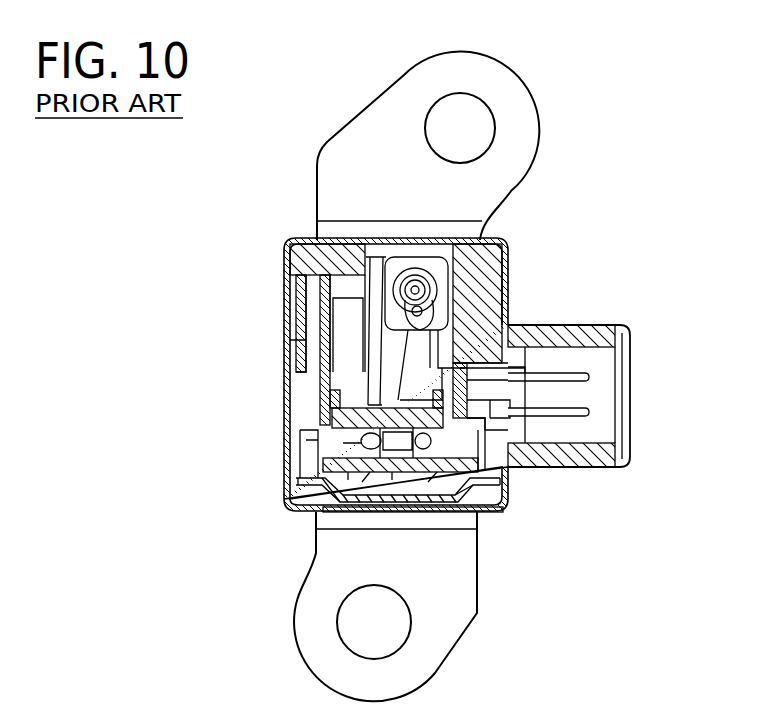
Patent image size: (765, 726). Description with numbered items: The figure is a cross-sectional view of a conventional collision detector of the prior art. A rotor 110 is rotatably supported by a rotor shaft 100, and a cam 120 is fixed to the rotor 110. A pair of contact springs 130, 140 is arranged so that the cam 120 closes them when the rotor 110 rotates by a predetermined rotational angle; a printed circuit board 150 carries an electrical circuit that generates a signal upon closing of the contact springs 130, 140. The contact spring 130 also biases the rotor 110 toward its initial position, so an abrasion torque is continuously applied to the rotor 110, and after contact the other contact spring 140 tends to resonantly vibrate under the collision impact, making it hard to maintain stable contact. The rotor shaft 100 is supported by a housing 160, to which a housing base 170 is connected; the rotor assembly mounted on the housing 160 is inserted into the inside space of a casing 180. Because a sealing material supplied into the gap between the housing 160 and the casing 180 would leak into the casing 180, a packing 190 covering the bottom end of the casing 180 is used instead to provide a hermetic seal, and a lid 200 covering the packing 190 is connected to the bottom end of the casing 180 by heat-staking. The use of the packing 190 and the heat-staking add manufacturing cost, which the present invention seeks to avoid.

The rotor shaft 100 is at (428, 283).
The rotor 110 is at (430, 355).
The cam 120 is at (428, 310).
The contact spring 130 is at (513, 385).
The contact spring 140 is at (370, 355).
The printed circuit board 150 is at (440, 512).
The housing 160 is at (322, 395).
The housing base 170 is at (330, 445).
The casing 180 is at (318, 437).
The packing 190 is at (316, 512).
The lid 200 is at (475, 512).